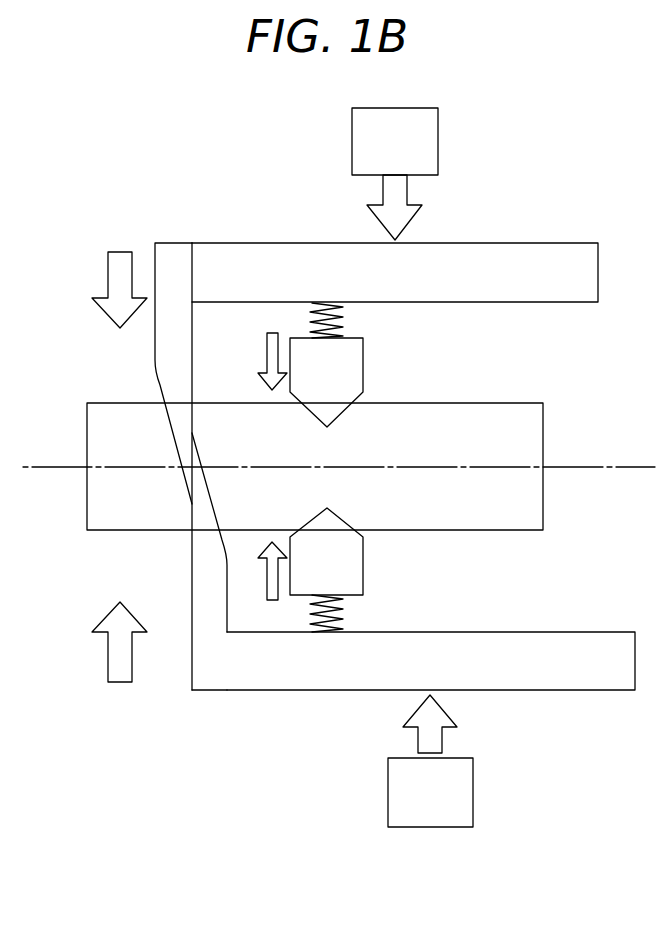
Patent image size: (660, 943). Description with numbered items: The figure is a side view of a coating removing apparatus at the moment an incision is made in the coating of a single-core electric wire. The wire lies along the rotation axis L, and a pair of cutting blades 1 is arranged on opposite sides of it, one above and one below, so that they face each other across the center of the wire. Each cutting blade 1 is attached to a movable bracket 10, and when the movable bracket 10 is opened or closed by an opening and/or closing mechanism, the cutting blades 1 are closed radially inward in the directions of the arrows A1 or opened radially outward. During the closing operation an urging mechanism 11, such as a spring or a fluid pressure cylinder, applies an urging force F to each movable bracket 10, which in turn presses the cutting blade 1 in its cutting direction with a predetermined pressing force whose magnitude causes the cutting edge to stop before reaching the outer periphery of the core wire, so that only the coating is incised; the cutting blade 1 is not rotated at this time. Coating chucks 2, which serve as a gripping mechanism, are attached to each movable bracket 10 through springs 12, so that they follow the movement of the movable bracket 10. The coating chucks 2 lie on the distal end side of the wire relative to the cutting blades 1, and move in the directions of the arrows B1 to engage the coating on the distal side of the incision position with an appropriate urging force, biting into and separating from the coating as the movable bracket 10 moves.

The cutting blade 1 is at (172, 256).
The coating chuck 2 is at (352, 366).
The movable bracket 10 is at (527, 262).
The urging mechanism 11 is at (424, 142).
The spring 12 is at (312, 318).
The rotation axis L is at (40, 466).
The urging force F is at (408, 190).
The arrow direction A1 is at (108, 467).
The arrow movement B1 is at (259, 466).